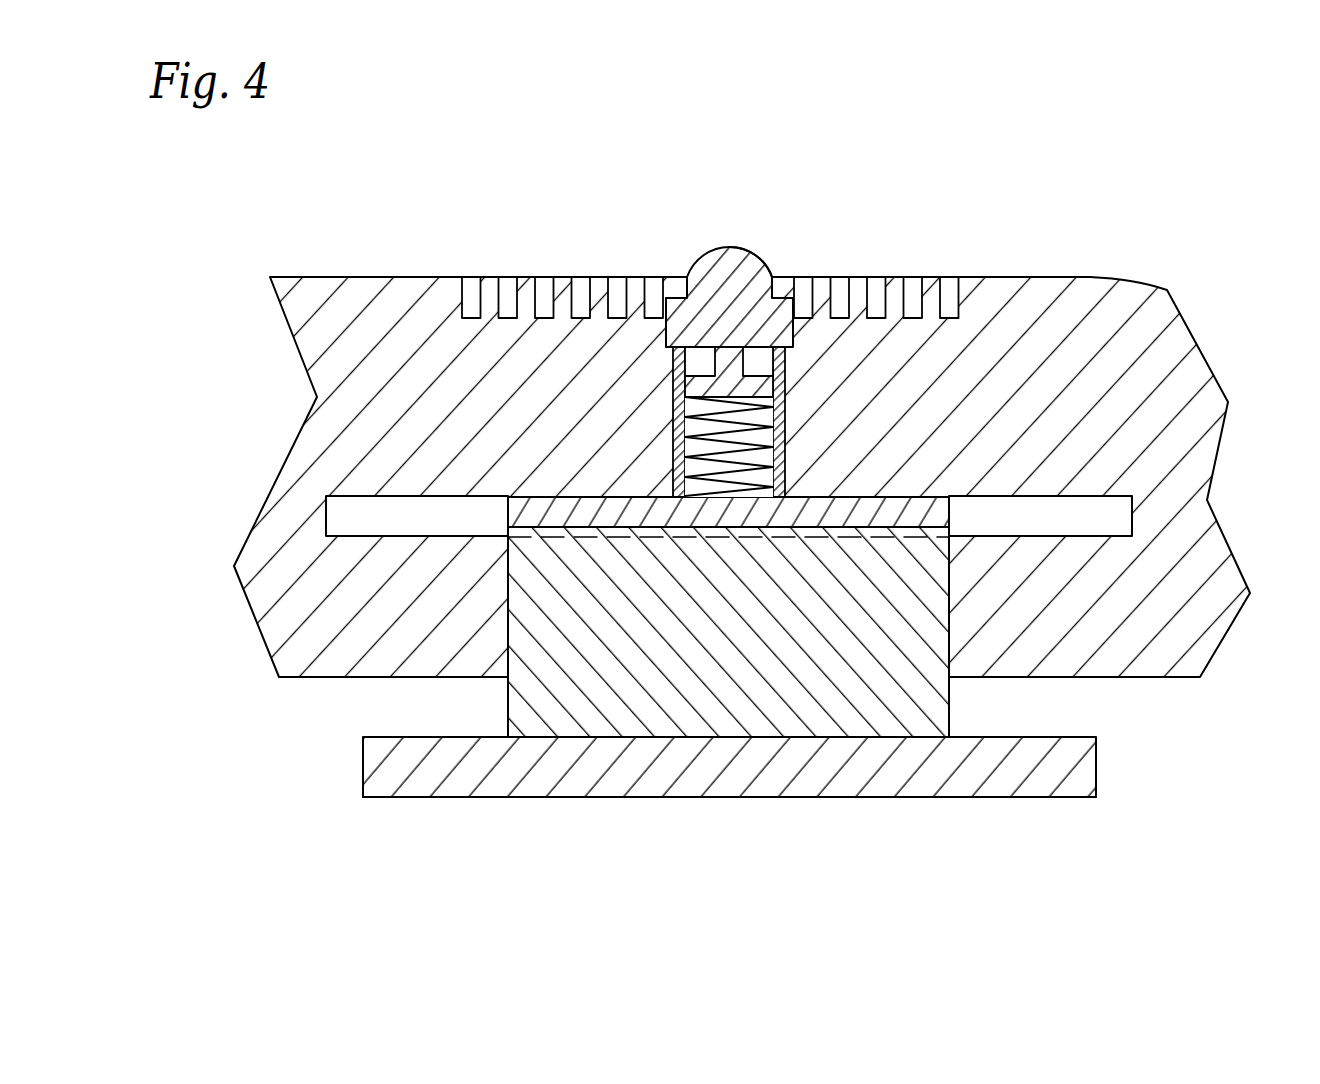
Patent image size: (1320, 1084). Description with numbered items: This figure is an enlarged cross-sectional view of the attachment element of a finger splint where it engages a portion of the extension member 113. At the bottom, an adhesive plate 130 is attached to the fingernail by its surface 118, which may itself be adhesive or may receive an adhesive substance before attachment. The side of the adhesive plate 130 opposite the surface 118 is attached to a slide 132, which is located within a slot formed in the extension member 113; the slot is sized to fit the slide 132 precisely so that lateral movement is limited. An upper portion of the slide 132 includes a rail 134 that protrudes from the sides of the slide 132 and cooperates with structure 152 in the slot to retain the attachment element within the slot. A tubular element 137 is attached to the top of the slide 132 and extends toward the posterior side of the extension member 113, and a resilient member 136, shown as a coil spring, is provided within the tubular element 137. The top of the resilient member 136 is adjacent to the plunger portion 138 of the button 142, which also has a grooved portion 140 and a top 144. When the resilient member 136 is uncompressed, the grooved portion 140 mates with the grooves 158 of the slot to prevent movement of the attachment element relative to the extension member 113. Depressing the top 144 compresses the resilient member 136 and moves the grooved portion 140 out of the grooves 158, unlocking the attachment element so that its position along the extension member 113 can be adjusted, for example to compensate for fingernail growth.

The extension member 113 is at (742, 440).
The grooves 158 is at (731, 272).
The structure 152 is at (351, 474).
The slide 132 is at (610, 617).
The rail 134 is at (898, 448).
The tubular element 137 is at (607, 360).
The plunger portion 138 is at (825, 289).
The resilient member 136 is at (907, 363).
The grooved portion 140 is at (660, 275).
The top 144 is at (697, 227).
The button 142 is at (787, 243).
The adhesive plate 130 is at (787, 782).
The surface 118 is at (729, 831).